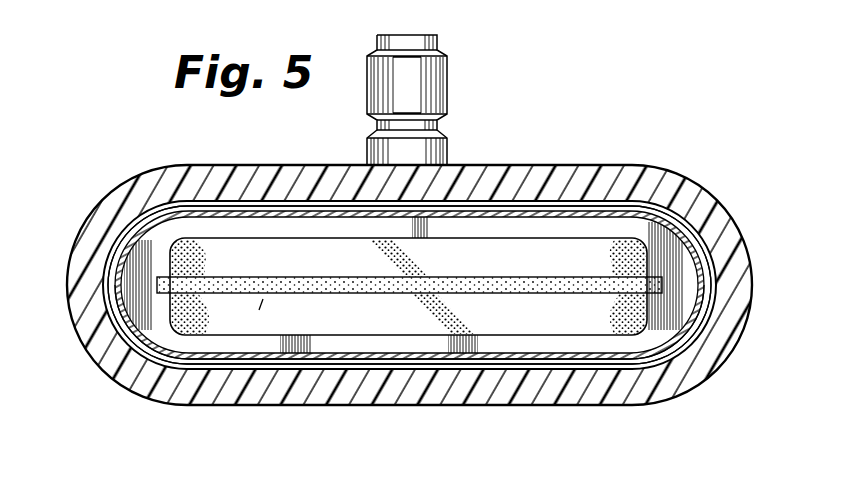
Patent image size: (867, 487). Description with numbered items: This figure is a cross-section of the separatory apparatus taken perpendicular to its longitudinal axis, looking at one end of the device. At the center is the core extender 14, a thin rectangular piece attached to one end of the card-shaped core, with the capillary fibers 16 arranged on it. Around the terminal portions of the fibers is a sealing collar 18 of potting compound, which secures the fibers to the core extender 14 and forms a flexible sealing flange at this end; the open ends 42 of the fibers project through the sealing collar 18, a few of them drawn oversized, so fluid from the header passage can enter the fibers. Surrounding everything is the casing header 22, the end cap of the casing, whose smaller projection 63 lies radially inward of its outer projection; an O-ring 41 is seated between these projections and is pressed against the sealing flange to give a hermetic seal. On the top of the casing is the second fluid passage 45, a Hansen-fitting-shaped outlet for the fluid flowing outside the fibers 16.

The core extender 14 is at (253, 278).
The capillary fibers 16 is at (192, 212).
The sealing collar 18 is at (132, 328).
The casing header 22 is at (661, 169).
The O-ring 41 is at (463, 203).
The open ends of the fibers 42 is at (182, 358).
The second fluid passage 45 is at (448, 92).
The smaller projection 63 is at (523, 220).